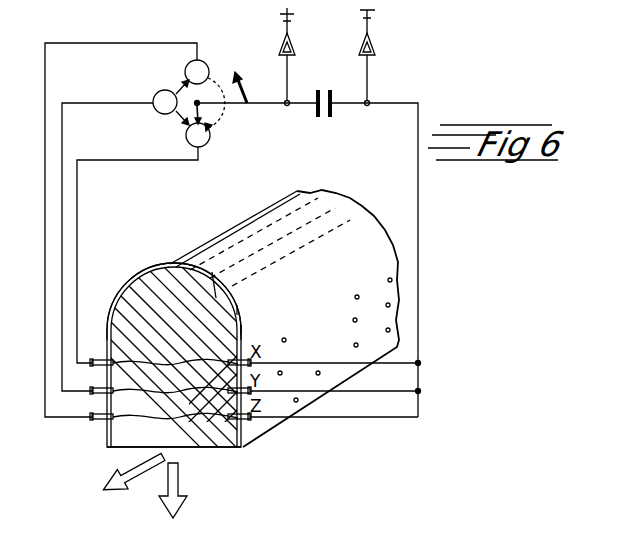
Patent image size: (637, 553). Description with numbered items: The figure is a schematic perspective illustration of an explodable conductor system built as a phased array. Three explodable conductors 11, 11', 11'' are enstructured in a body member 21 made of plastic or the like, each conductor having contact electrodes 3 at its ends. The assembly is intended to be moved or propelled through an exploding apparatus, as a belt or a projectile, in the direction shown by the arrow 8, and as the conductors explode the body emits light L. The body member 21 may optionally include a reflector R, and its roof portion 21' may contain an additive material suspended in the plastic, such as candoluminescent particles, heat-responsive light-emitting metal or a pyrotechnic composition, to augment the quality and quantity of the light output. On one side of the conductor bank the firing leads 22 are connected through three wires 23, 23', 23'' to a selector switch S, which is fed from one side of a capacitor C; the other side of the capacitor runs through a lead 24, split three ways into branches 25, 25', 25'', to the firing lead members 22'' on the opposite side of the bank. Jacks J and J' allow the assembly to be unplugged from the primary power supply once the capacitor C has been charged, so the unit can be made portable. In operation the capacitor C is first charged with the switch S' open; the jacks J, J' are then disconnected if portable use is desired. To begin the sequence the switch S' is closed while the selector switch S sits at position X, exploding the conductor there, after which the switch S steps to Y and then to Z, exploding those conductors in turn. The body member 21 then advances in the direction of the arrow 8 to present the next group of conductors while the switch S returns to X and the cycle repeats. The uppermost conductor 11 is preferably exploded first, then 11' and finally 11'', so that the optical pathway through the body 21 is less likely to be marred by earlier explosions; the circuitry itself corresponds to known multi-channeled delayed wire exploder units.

The contact electrodes 3 is at (233, 447).
The arrow indicating direction of movement 8 is at (133, 478).
The explodable conductor 11 is at (231, 280).
The explodable conductor 11' is at (254, 296).
The explodable conductor 11'' is at (267, 315).
The body member 21 is at (318, 297).
The roof portion of body member 21' is at (166, 293).
The firing lead 22 is at (81, 407).
The firing lead members 22'' is at (273, 409).
The wire 23 is at (137, 251).
The wire 23' is at (107, 236).
The wire 23'' is at (121, 219).
The lead 24 is at (417, 320).
The split lead 25 is at (348, 362).
The split lead 25' is at (350, 389).
The split lead 25'' is at (353, 415).
The reflector R is at (302, 220).
The switch S is at (189, 108).
The switch S' is at (251, 100).
The capacitor C is at (314, 115).
The jack J is at (370, 58).
The jack J' is at (292, 57).
The emitted light L is at (179, 490).